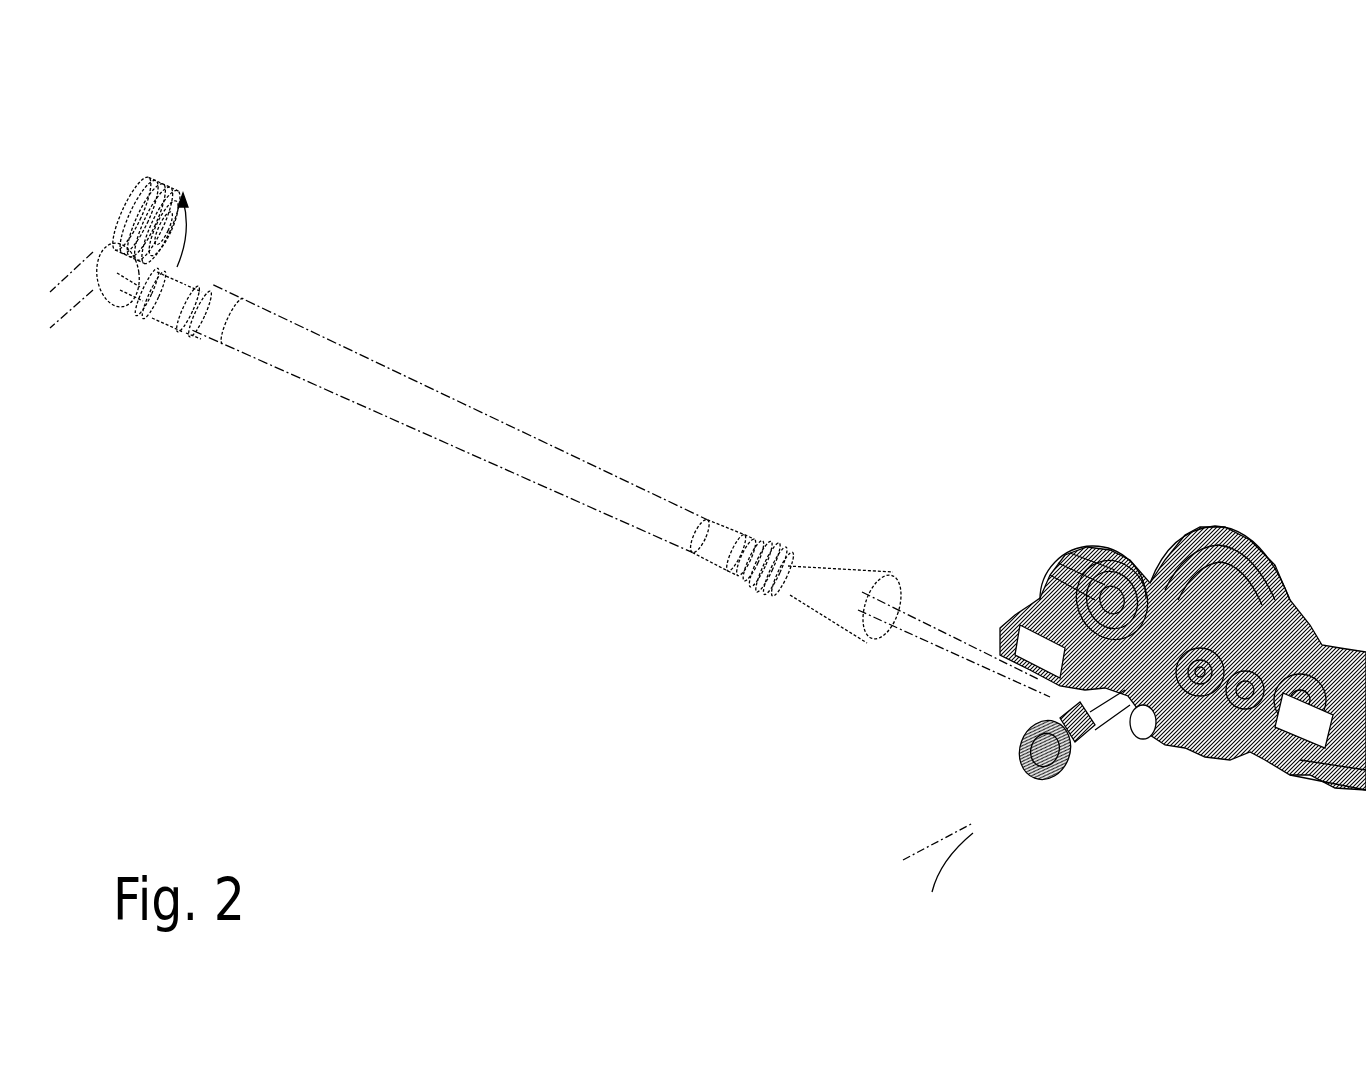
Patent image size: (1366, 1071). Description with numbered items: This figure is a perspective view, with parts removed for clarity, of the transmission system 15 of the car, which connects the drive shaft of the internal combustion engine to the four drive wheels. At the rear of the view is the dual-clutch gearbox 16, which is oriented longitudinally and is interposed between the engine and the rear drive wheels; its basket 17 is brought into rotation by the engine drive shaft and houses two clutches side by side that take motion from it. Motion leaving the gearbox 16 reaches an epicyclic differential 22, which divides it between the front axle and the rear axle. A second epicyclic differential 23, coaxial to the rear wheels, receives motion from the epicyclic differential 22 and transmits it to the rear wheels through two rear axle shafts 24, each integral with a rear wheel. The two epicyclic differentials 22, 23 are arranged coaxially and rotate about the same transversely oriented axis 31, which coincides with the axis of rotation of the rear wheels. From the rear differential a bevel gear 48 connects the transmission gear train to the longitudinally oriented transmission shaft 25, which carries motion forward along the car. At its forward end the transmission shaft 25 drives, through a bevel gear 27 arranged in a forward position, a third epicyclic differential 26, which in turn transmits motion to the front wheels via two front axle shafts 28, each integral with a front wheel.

The transmission system 15 is at (1240, 104).
The dual-clutch gearbox 16 is at (1170, 568).
The basket 17 is at (1030, 610).
The epicyclic differential 22 is at (1121, 648).
The epicyclic differential 23 is at (1229, 652).
The rear axle shaft 24 is at (942, 874).
The transmission shaft 25 is at (907, 697).
The epicyclic differential 26 is at (242, 98).
The bevel gear 27 is at (173, 266).
The front axle shaft 28 is at (108, 152).
The axis of rotation 31 is at (928, 847).
The bevel gear 48 is at (1067, 866).